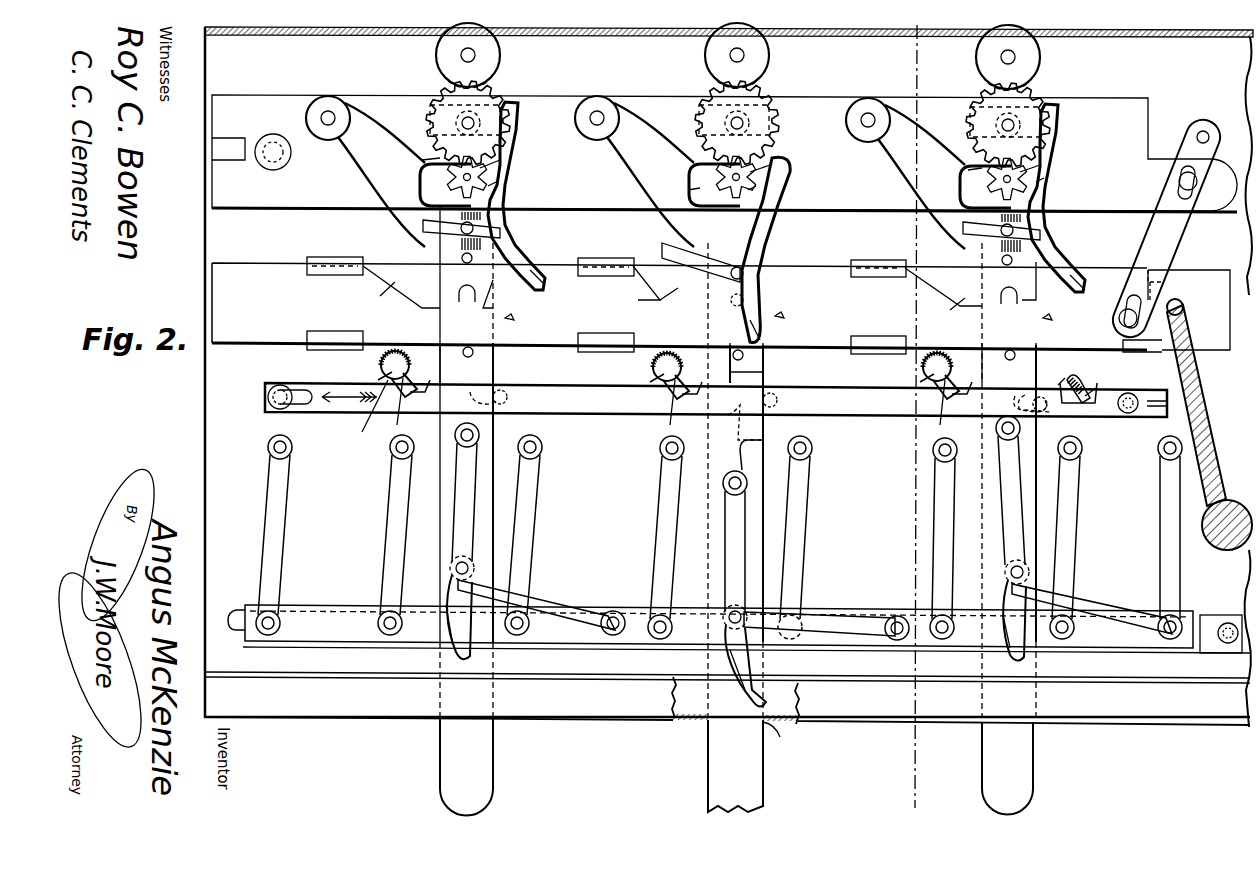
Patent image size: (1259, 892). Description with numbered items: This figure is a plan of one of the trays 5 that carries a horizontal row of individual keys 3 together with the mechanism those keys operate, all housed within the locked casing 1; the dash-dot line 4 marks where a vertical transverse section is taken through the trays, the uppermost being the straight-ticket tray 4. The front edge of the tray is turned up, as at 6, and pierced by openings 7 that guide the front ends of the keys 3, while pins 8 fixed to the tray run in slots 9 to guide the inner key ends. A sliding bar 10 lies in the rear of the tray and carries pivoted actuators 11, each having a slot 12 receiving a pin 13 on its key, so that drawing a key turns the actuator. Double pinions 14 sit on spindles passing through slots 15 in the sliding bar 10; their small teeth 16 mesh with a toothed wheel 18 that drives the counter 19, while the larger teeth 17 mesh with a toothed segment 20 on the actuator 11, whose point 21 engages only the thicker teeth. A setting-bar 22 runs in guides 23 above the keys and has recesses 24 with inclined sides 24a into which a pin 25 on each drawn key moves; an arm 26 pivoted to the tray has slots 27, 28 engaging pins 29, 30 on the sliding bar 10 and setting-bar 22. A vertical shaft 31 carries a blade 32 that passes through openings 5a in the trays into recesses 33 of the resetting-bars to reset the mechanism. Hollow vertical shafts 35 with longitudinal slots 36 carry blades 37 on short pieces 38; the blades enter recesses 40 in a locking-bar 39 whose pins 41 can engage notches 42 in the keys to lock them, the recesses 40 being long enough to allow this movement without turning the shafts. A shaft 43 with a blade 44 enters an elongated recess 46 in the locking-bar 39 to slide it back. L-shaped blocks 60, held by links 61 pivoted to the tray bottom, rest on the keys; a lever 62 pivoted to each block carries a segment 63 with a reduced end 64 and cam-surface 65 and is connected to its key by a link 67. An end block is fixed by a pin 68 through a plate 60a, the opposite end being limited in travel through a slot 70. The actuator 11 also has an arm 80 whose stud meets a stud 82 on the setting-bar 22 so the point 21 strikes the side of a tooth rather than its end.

The casing 1 is at (600, 30).
The individual keys 3 is at (736, 767).
The tray 4 is at (913, 416).
The tray 5 is at (728, 377).
The opening 5a is at (1138, 390).
The turned-up front edge 6 is at (840, 612).
The openings 7 is at (770, 724).
The pins 8 is at (475, 352).
The slots 9 is at (478, 300).
The sliding bar 10 is at (284, 159).
The actuators 11 is at (378, 150).
The slots 12 is at (425, 232).
The pins 13 is at (500, 228).
The double pinions 14 is at (492, 188).
The slots 15 is at (426, 192).
The small teeth 16 is at (495, 175).
The larger teeth 17 is at (492, 176).
The toothed wheel 18 is at (487, 103).
The counter 19 is at (436, 56).
The toothed segment 20 is at (520, 121).
The point 21 is at (425, 167).
The setting-bar 22 is at (679, 306).
The guides 23 is at (333, 275).
The recesses 24 is at (699, 285).
The inclined sides 24a is at (663, 304).
The pin 25 is at (467, 262).
The arm 26 is at (1170, 235).
The slot 27 is at (1180, 180).
The slot 28 is at (1138, 310).
The pin 29 is at (1195, 184).
The pin 30 is at (1119, 317).
The shaft 31 is at (1232, 550).
The blade 32 is at (1200, 420).
The recesses 33 is at (1185, 318).
The hollow vertical shaft 35 is at (381, 365).
The longitudinal slots 36 is at (368, 415).
The blades 37 is at (933, 395).
The short pieces 38 is at (400, 362).
The locking-bar 39 is at (716, 400).
The recesses 40 is at (1096, 454).
The pins 41 is at (510, 404).
The notches 42 is at (480, 392).
The shaft 43 is at (1070, 375).
The blade 44 is at (1090, 392).
The elongated recesses 46 is at (1080, 405).
The blocks 60 is at (328, 605).
The plates 60a is at (1215, 615).
The links 61 is at (370, 507).
The lever 62 is at (562, 600).
The segment 63 is at (452, 590).
The small end 64 is at (472, 657).
The cam-surface 65 is at (450, 640).
The links 67 is at (455, 507).
The pins 68 is at (1228, 643).
The slots 70 is at (236, 610).
The arm 80 is at (535, 275).
The studs 82 is at (783, 315).